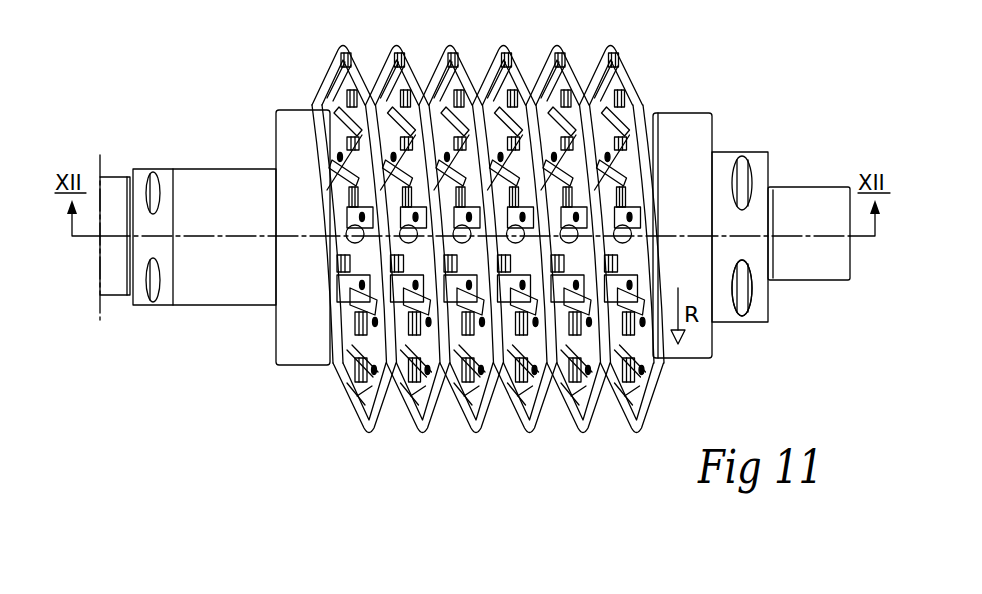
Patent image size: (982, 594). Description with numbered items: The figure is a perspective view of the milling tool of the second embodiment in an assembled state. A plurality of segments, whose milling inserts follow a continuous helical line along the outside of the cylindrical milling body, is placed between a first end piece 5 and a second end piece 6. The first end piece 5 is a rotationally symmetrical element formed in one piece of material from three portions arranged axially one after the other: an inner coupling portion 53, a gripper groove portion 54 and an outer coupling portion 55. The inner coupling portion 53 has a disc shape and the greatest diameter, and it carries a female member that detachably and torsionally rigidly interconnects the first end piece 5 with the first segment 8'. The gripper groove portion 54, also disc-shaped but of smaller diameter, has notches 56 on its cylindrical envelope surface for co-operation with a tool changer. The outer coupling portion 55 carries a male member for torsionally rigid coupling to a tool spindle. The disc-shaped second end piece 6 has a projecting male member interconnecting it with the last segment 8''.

The first end piece 5 is at (684, 97).
The second end piece 6 is at (300, 350).
The last segment 8'' is at (329, 227).
The first segment 8' is at (622, 267).
The inner coupling portion 53 is at (695, 148).
The gripper groove portion 54 is at (762, 168).
The outer coupling portion 55 is at (828, 267).
The notches 56 is at (743, 300).